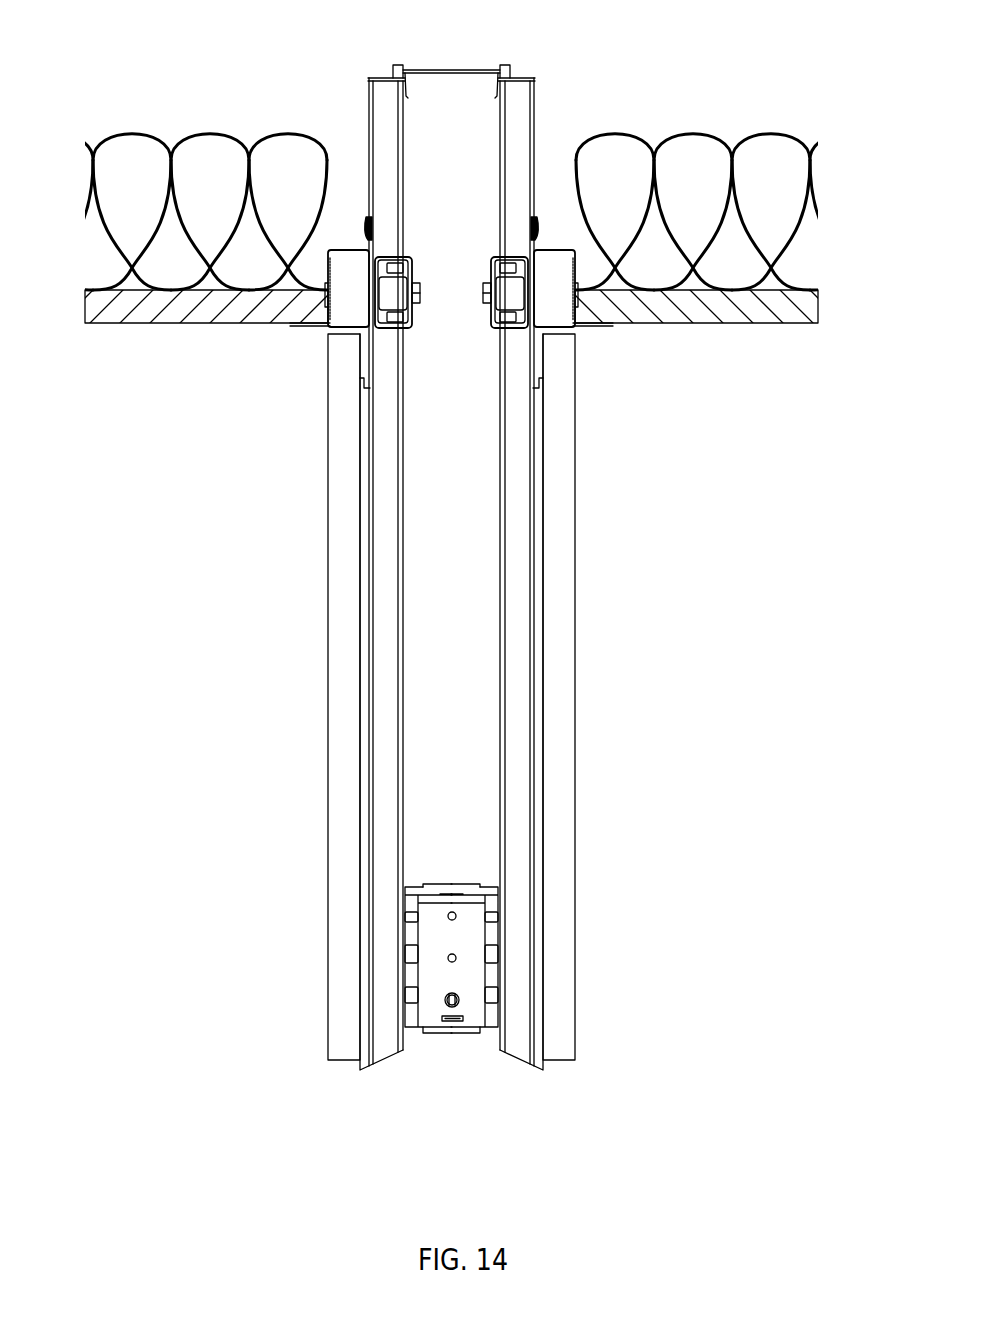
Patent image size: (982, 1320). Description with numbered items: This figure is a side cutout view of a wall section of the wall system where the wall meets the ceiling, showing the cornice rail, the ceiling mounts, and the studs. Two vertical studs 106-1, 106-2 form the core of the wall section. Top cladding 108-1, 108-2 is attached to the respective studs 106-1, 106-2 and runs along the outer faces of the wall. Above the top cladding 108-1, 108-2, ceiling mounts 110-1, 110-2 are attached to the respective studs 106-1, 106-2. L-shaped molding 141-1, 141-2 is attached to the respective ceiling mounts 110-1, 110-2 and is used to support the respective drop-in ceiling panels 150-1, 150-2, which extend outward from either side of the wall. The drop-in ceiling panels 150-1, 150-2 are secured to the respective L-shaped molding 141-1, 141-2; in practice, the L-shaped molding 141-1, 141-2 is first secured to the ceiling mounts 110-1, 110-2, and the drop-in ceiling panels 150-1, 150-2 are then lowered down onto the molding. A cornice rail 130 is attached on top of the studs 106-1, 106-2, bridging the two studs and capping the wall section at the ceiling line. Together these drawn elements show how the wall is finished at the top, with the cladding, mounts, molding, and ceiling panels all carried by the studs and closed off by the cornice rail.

The cornice rail 130 is at (450, 70).
The ceiling mount 110-1 is at (348, 331).
The ceiling mount 110-2 is at (555, 331).
The L-shaped molding 141-1 is at (293, 325).
The L-shaped molding 141-2 is at (610, 328).
The drop-in ceiling panel 150-1 is at (162, 325).
The drop-in ceiling panel 150-2 is at (738, 327).
The top cladding 108-1 is at (328, 723).
The top cladding 108-2 is at (575, 723).
The stud 106-1 is at (370, 917).
The stud 106-2 is at (533, 917).